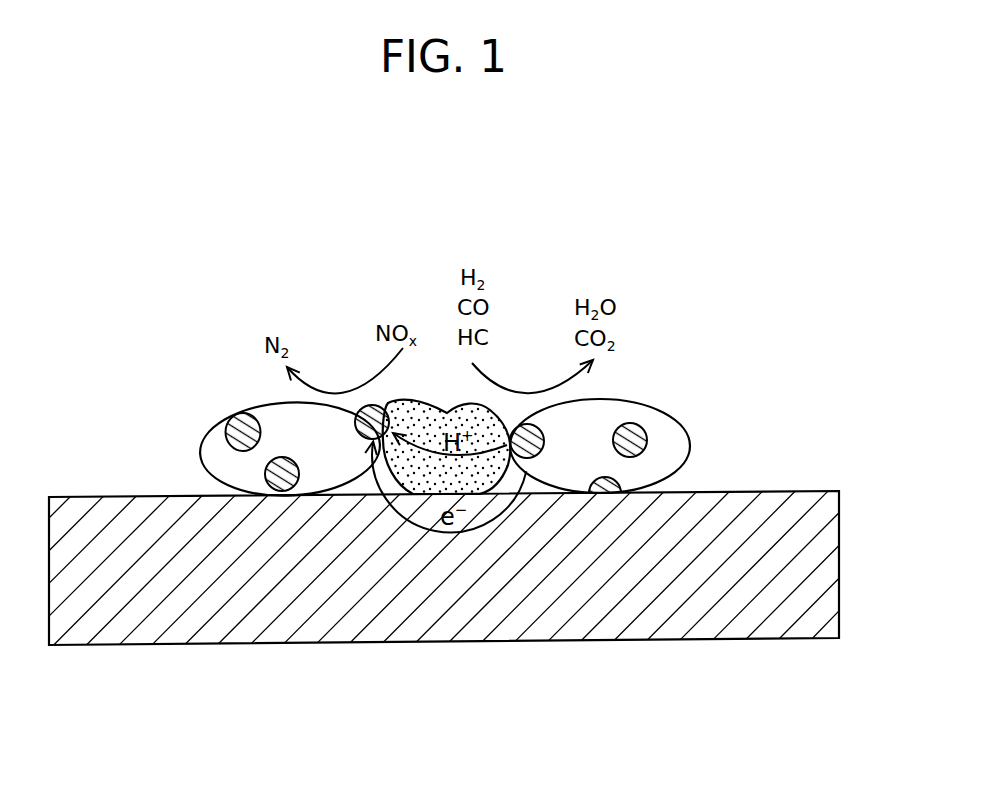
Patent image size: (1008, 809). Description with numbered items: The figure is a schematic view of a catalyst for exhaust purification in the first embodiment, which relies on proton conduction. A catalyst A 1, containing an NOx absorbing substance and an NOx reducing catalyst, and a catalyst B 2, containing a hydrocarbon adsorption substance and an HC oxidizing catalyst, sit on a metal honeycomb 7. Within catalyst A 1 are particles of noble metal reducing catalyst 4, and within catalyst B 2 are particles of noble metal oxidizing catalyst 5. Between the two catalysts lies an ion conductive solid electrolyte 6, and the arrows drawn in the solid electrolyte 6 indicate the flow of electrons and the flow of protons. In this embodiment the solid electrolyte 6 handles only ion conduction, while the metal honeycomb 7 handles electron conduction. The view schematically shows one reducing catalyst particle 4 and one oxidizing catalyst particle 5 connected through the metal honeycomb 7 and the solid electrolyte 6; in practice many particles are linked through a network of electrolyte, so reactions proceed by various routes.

The catalyst A 1 is at (220, 467).
The catalyst B 2 is at (670, 442).
The particle of noble metal reducing catalyst 4 is at (243, 426).
The particle of noble metal oxidizing catalyst 5 is at (636, 431).
The ion conductive solid electrolyte 6 is at (415, 422).
The metal honeycomb 7 is at (626, 612).